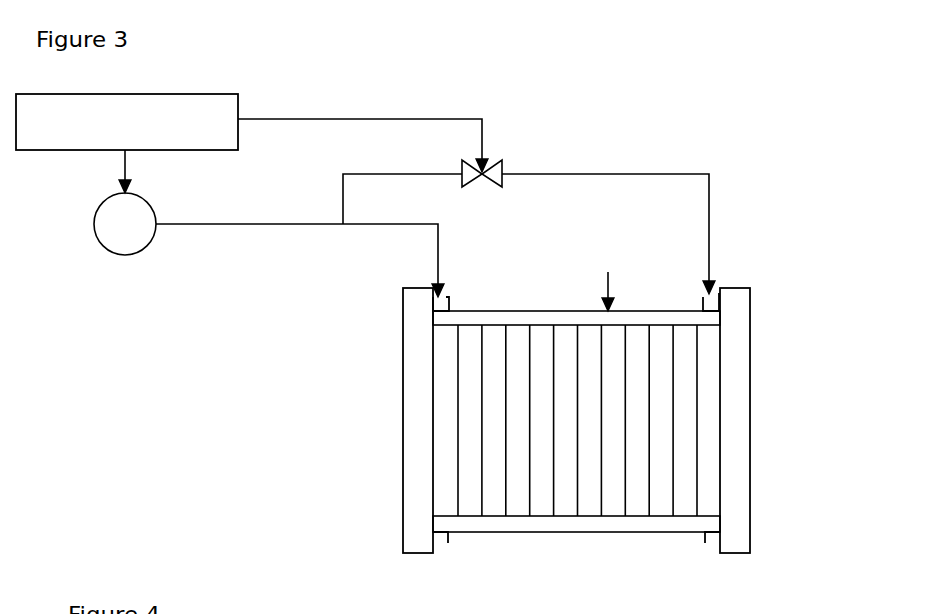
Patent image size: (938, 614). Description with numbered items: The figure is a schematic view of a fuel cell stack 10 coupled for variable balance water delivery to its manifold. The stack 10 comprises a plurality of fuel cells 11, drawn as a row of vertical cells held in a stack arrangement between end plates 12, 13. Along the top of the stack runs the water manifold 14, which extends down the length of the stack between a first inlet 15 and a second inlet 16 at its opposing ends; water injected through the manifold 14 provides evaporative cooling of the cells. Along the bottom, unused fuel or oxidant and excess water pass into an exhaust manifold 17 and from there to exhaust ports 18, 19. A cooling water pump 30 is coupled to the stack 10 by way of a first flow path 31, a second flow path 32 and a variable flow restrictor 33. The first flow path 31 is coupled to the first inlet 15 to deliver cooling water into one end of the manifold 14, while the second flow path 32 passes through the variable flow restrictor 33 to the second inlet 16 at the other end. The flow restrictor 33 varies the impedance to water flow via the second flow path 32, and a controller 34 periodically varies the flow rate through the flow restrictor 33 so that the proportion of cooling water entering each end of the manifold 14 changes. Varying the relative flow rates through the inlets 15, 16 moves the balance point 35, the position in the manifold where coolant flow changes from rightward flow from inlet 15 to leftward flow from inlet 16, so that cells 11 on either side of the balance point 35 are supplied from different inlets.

The fuel cell stack 10 is at (350, 361).
The fuel cells 11 is at (528, 332).
The end plate 12 is at (413, 407).
The end plate 13 is at (740, 402).
The manifold 14 is at (483, 318).
The first inlet 15 is at (447, 300).
The second inlet 16 is at (704, 297).
The exhaust manifold 17 is at (578, 527).
The exhaust port 18 is at (448, 545).
The exhaust port 19 is at (705, 543).
The cooling water pump 30 is at (96, 232).
The first flow path 31 is at (397, 224).
The second flow path 32 is at (713, 239).
The variable flow restrictor 33 is at (502, 163).
The controller 34 is at (55, 151).
The balance point 35 is at (609, 280).